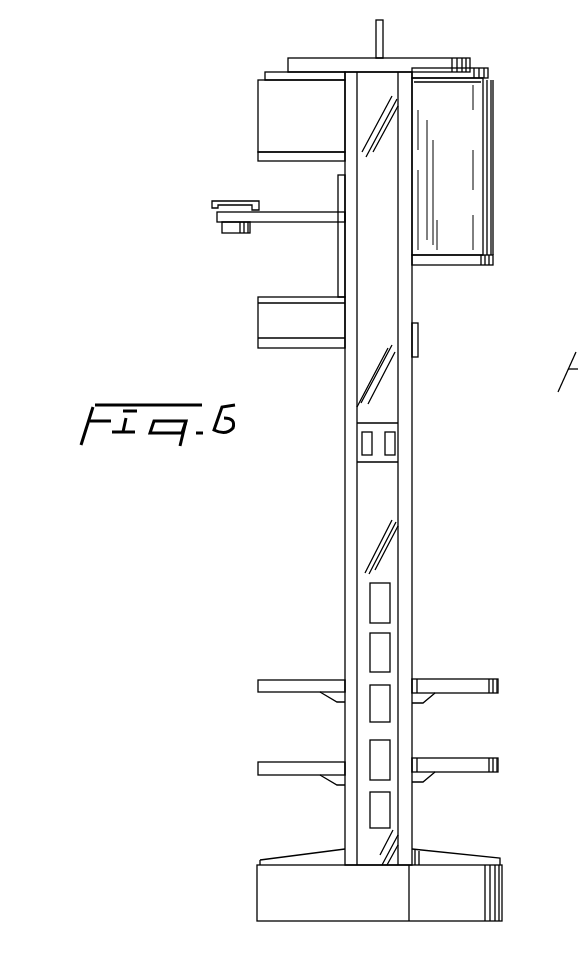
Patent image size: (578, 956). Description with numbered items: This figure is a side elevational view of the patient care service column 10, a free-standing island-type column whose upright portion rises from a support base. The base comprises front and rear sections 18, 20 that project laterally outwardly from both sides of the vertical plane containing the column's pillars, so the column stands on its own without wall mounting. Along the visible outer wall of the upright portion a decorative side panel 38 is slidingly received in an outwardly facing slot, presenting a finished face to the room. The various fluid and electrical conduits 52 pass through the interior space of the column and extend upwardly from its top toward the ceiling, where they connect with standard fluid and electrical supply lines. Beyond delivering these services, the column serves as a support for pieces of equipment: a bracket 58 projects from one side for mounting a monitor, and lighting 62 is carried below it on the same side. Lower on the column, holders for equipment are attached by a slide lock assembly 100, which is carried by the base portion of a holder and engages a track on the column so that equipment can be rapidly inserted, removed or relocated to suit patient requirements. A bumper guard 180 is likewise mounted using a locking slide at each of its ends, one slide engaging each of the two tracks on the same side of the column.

The patient care service column 10 is at (511, 116).
The front section 18 is at (265, 895).
The rear section 20 is at (500, 878).
The decorative side panel 38 is at (387, 393).
The fluid and electrical conduits 52 is at (385, 46).
The bracket 58 is at (219, 194).
The lighting 62 is at (255, 321).
The slide lock assembly 100 is at (424, 779).
The bumper guard 180 is at (280, 760).